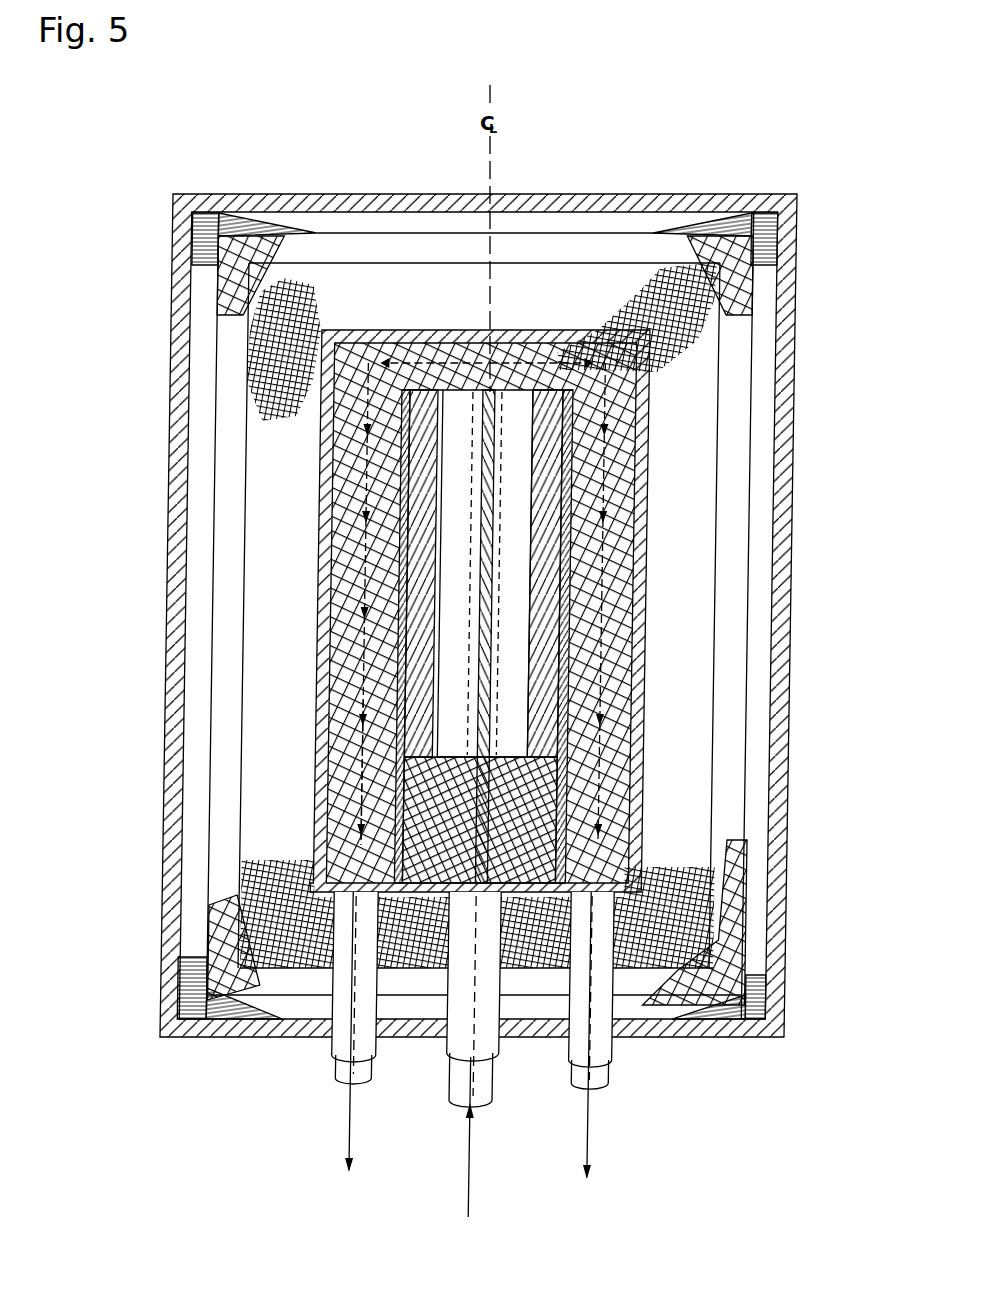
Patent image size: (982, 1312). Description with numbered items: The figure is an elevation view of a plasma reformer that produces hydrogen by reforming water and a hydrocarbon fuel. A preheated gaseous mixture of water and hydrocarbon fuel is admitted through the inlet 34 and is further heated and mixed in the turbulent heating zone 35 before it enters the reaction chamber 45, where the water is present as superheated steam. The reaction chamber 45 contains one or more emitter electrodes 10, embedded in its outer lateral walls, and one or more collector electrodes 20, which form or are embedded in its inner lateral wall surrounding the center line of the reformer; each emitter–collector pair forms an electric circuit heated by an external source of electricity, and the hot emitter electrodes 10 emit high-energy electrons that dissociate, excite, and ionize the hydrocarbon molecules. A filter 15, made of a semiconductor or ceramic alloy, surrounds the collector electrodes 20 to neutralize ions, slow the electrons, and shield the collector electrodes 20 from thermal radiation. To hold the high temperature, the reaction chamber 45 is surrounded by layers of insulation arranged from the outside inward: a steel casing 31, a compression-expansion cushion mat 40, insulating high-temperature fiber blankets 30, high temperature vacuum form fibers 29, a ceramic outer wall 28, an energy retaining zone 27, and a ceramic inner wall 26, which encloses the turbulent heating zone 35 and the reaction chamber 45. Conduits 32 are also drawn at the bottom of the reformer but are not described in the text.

The emitter electrode 10 is at (556, 572).
The filter 15 is at (467, 599).
The collector electrode 20 is at (650, 466).
The ceramic inner wall 26 is at (400, 640).
The energy retaining zone 27 is at (640, 686).
The ceramic outer wall 28 is at (646, 603).
The high temperature vacuum form fibers 29 is at (693, 480).
The insulating high-temperature fiber blankets 30 is at (727, 821).
The steel casing 31 is at (160, 982).
The coolant conduit 32 is at (332, 1064).
The inlet 34 is at (495, 1092).
The turbulent heating zone 35 is at (375, 796).
The compression-expansion cushion mat 40 is at (755, 636).
The reaction chamber 45 is at (462, 724).